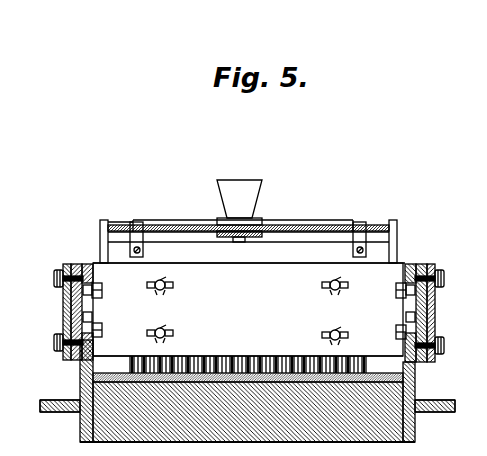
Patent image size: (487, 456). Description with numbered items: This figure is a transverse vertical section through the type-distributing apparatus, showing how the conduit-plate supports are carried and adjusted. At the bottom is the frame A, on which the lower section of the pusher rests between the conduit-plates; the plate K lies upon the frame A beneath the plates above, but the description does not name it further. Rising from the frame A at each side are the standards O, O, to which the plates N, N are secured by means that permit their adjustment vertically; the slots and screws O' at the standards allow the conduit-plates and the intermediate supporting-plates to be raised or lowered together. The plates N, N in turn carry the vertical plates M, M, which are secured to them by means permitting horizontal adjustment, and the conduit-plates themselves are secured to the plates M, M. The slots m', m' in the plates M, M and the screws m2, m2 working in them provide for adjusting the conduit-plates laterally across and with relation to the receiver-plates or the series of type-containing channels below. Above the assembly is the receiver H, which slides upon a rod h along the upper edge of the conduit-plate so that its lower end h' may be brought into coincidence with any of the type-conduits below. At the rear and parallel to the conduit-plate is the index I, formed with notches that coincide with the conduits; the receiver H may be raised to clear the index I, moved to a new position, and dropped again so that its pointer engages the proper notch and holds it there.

The frame A is at (243, 412).
The perforated plate K is at (374, 364).
The vertical plate M is at (246, 309).
The plate N is at (70, 362).
The standard O is at (249, 300).
The screw O' is at (249, 307).
The index I is at (248, 235).
The rod h is at (243, 226).
The lower end of receiver h' is at (239, 248).
The receiver H is at (239, 202).
The slot m' is at (256, 313).
The screw m2 is at (166, 277).